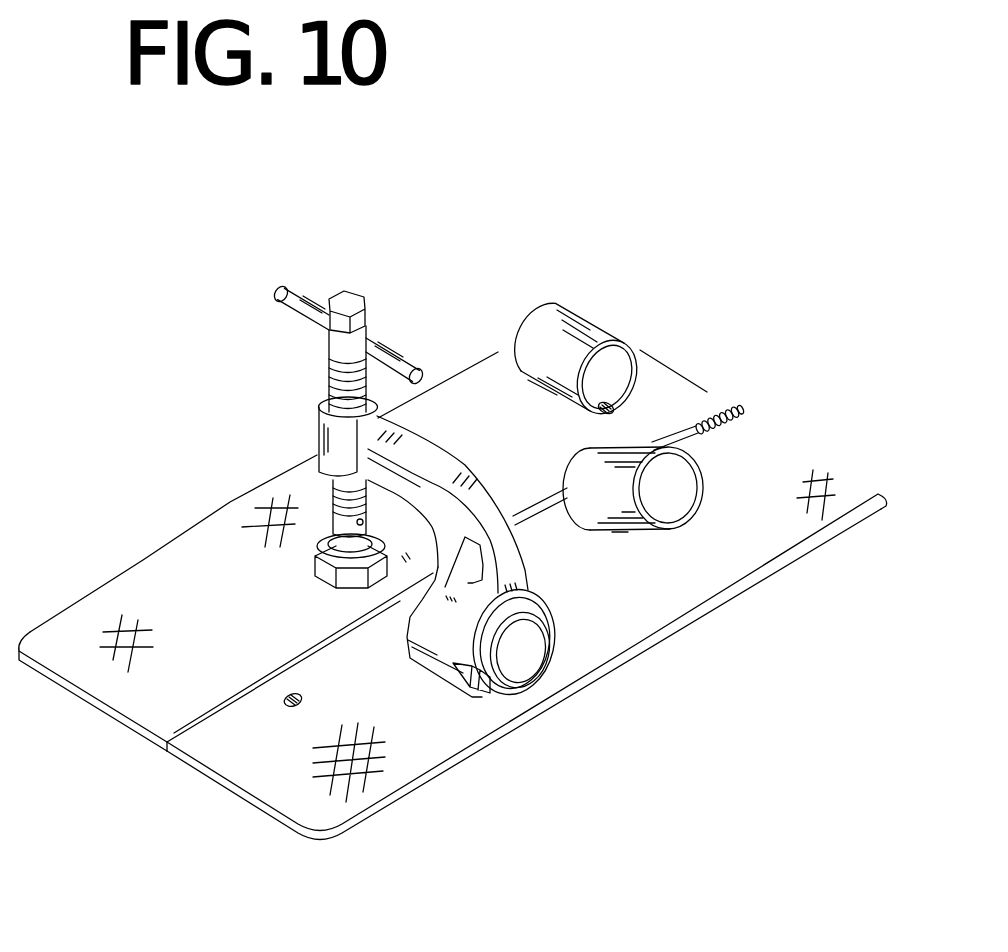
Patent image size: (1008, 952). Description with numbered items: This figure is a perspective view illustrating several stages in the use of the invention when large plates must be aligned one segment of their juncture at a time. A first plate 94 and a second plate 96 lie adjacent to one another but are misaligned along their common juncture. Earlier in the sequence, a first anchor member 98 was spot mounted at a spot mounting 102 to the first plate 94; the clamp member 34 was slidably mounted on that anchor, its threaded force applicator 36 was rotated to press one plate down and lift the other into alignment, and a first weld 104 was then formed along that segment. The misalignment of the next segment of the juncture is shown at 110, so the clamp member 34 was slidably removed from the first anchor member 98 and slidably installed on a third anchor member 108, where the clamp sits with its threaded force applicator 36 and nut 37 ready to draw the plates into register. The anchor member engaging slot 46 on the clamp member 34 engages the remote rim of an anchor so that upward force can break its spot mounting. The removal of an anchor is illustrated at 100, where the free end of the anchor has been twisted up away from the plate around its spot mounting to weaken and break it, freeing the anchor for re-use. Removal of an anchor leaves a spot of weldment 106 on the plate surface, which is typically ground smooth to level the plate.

The clamp body member 34 is at (475, 500).
The threaded force applicator 36 is at (332, 377).
The nut 37 is at (327, 570).
The anchor member engaging slot 46 is at (470, 692).
The first plate 94 is at (655, 363).
The second plate 96 is at (757, 433).
The first anchor member 98 is at (525, 313).
The removal of an anchor member 100 is at (678, 490).
The spot mounting 102 is at (617, 402).
The first weld 104 is at (740, 407).
The spot of weldment 106 is at (283, 703).
The third anchor member 108 is at (530, 650).
The misalignment of the next segment of the juncture 110 is at (533, 514).